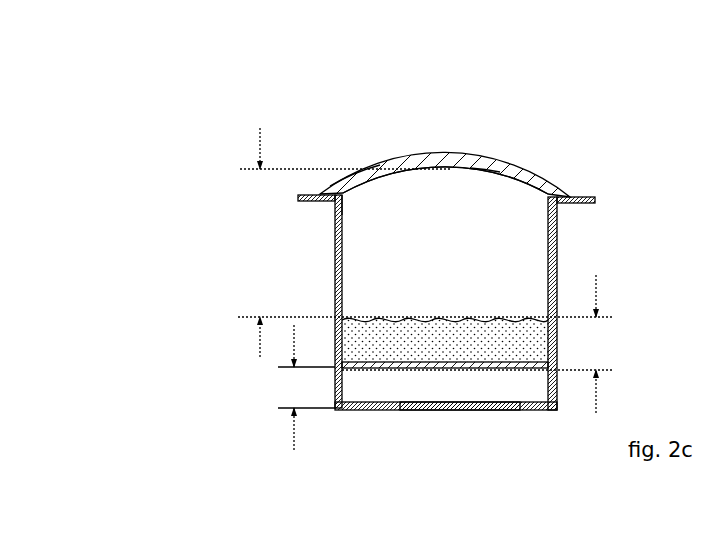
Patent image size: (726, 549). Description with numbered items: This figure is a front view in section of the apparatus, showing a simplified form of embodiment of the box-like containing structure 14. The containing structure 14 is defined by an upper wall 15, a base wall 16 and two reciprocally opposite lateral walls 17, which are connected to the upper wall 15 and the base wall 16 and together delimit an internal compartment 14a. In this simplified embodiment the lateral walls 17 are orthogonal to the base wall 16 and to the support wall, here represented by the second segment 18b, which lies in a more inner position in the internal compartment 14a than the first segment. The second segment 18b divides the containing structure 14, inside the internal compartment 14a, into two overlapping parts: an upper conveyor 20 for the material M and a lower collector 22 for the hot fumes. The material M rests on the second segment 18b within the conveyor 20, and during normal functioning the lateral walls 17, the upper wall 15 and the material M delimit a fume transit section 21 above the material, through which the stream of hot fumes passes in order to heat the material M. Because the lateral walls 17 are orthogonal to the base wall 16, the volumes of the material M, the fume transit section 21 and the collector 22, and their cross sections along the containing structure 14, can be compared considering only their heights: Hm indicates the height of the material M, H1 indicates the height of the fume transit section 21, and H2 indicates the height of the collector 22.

The containing structure 14 is at (578, 180).
The internal compartment 14a is at (528, 190).
The upper wall 15 is at (358, 176).
The base wall 16 is at (536, 409).
The lateral walls 17 is at (336, 271).
The second segment 18b is at (401, 367).
The conveyor 20 is at (348, 212).
The fume transit section 21 is at (486, 175).
The collector 22 is at (484, 402).
The material M is at (433, 338).
The height of the fume transit section H1 is at (258, 262).
The height of the collector H2 is at (292, 390).
The height of the material Hm is at (598, 345).